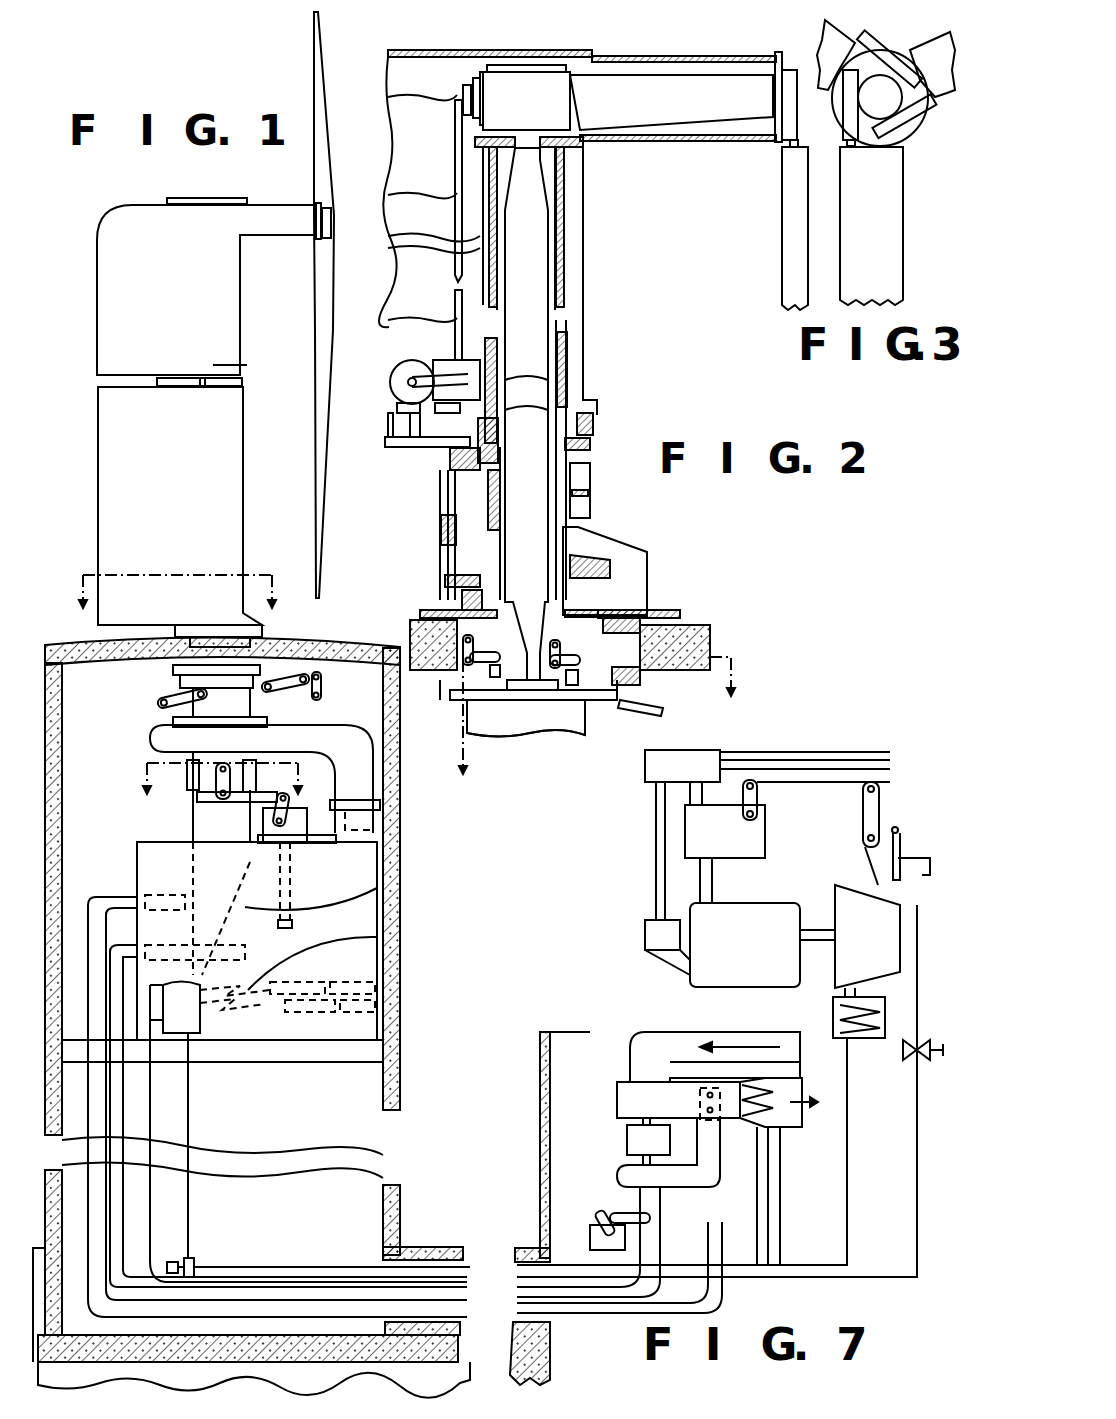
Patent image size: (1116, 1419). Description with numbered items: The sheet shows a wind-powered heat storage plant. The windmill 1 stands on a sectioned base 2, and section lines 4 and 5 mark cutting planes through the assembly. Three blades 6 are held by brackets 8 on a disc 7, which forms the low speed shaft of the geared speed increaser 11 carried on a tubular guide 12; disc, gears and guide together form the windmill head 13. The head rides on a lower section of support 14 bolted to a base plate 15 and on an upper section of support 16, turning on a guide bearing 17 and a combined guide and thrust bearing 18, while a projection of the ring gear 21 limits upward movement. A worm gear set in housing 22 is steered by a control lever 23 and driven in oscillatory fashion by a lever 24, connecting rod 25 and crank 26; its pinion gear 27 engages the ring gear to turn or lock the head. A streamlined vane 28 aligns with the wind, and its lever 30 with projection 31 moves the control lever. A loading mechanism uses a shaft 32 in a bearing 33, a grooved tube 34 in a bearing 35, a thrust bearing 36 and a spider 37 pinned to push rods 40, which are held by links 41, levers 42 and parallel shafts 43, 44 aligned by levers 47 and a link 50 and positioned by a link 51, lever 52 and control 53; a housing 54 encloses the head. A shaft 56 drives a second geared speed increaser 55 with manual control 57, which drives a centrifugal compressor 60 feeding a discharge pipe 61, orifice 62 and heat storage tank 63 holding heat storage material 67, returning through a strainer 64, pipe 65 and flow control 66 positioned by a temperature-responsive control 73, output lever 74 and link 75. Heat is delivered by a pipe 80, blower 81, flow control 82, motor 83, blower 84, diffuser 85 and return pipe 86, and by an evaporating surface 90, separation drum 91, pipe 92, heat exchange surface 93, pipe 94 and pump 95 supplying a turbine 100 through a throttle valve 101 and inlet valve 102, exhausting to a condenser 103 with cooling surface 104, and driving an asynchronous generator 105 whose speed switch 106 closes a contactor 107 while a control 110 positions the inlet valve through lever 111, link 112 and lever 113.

In FIG. 1, the windmill 1 is at (112, 218).
In FIG. 1, the base 2 is at (400, 870).
In FIG. 2, the base 2 is at (710, 633).
In FIG. 7, the base 2 is at (540, 1100).
In FIG. 1, the section line 4- 4 is at (174, 604).
In FIG. 2, the section line 5- 5 is at (604, 724).
In FIG. 1, the blades 6 is at (313, 62).
In FIG. 2, the blades 6 is at (782, 237).
In FIG. 3, the blades 6 is at (953, 108).
In FIG. 2, the disc 7 is at (777, 52).
In FIG. 3, the brackets 8 is at (865, 43).
In FIG. 2, the geared speed increaser 11 is at (598, 62).
In FIG. 2, the tubular guide 12 is at (570, 205).
In FIG. 1, the windmill head 13 is at (265, 200).
In FIG. 2, the lower section of support 14 is at (630, 605).
In FIG. 2, the base plate 15 is at (645, 622).
In FIG. 2, the upper section of support 16 is at (565, 319).
In FIG. 2, the guide bearing 17 is at (565, 152).
In FIG. 2, the combined guide and thrust bearing 18 is at (590, 446).
In FIG. 2, the ring gear 21 is at (595, 422).
In FIG. 2, the housing 22 is at (410, 360).
In FIG. 2, the control lever 23 is at (400, 408).
In FIG. 2, the lever 24 is at (393, 373).
In FIG. 2, the connecting rod 25 is at (455, 185).
In FIG. 2, the crank 26 is at (463, 96).
In FIG. 2, the pinion gear 27 is at (385, 442).
In FIG. 1, the vane 28 is at (98, 492).
In FIG. 2, the vane 28 is at (648, 572).
In FIG. 2, the lever 30 is at (448, 452).
In FIG. 2, the projection 31 is at (400, 423).
In FIG. 2, the shaft 32 is at (455, 500).
In FIG. 2, the bearing 33 is at (480, 472).
In FIG. 2, the tube 34 is at (450, 525).
In FIG. 2, the bearing 35 is at (465, 546).
In FIG. 2, the thrust bearing 36 is at (470, 575).
In FIG. 2, the spider 37 is at (612, 562).
In FIG. 2, the push rods 40 is at (480, 600).
In FIG. 2, the links 41 is at (418, 622).
In FIG. 2, the levers 42 is at (470, 682).
In FIG. 2, the shaft 43 is at (486, 650).
In FIG. 2, the shaft 44 is at (574, 654).
In FIG. 2, the levers 47 is at (482, 702).
In FIG. 2, the link 50 is at (542, 719).
In FIG. 2, the link 51 is at (642, 711).
In FIG. 1, the lever 52 is at (301, 697).
In FIG. 1, the control 53 is at (350, 690).
In FIG. 1, the housing 54 is at (97, 300).
In FIG. 2, the housing 54 is at (700, 141).
In FIG. 1, the second geared speed increaser 55 is at (250, 710).
In FIG. 2, the second geared speed increaser 55 is at (590, 737).
In FIG. 2, the shaft 56 is at (560, 360).
In FIG. 1, the manual control 57 is at (158, 702).
In FIG. 1, the centrifugal compressor 60 is at (150, 740).
In FIG. 1, the discharge pipe 61 is at (385, 800).
In FIG. 1, the orifice 62 is at (380, 830).
In FIG. 1, the heat storage tank 63 is at (380, 928).
In FIG. 1, the strainer 64 is at (383, 883).
In FIG. 1, the pipe 65 is at (193, 828).
In FIG. 1, the flow control 66 is at (187, 780).
In FIG. 1, the heat storage material 67 is at (383, 978).
In FIG. 1, the temperature-responsive control 73 is at (322, 843).
In FIG. 1, the output lever 74 is at (288, 800).
In FIG. 1, the link 75 is at (233, 805).
In FIG. 1, the pipe 80 is at (123, 1098).
In FIG. 7, the pipe 80 is at (660, 1240).
In FIG. 7, the blower 81 is at (617, 1176).
In FIG. 7, the flow control 82 is at (590, 1232).
In FIG. 7, the motor 83 is at (627, 1140).
In FIG. 7, the blower 84 is at (617, 1101).
In FIG. 7, the diffuser 85 is at (720, 1115).
In FIG. 1, the pipe 86 is at (118, 897).
In FIG. 7, the pipe 86 is at (722, 1240).
In FIG. 1, the evaporating surface 90 is at (383, 937).
In FIG. 1, the separation drum 91 is at (210, 1040).
In FIG. 1, the pipe 92 is at (150, 1120).
In FIG. 7, the pipe 92 is at (795, 1192).
In FIG. 7, the heat exchange surface 93 is at (780, 1118).
In FIG. 7, the pipe 94 is at (765, 1170).
In FIG. 1, the pump 95 is at (194, 1262).
In FIG. 7, the turbine 100 is at (845, 886).
In FIG. 7, the throttle valve 101 is at (910, 1065).
In FIG. 7, the inlet valve 102 is at (930, 870).
In FIG. 7, the condenser 103 is at (868, 1040).
In FIG. 7, the surface 104 is at (833, 1005).
In FIG. 7, the asynchronous generator 105 is at (805, 908).
In FIG. 7, the speed switch 106 is at (648, 938).
In FIG. 7, the contactor 107 is at (735, 752).
In FIG. 7, the control 110 is at (765, 845).
In FIG. 7, the lever 111 is at (757, 796).
In FIG. 7, the link 112 is at (800, 790).
In FIG. 7, the lever 113 is at (880, 795).